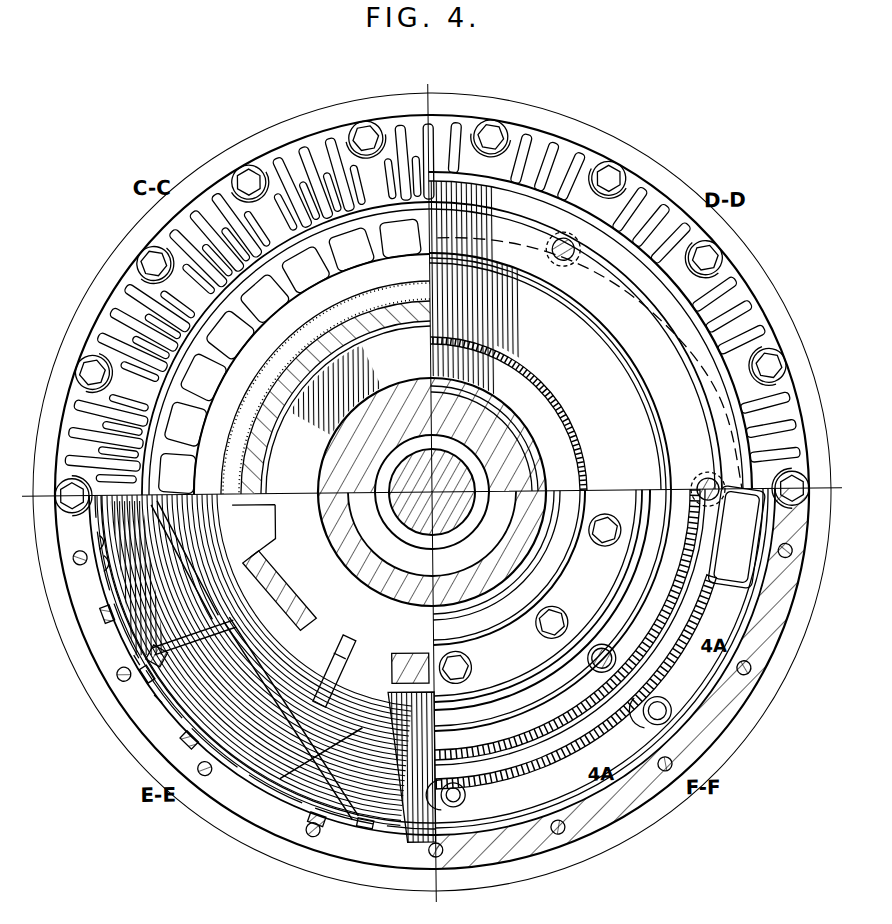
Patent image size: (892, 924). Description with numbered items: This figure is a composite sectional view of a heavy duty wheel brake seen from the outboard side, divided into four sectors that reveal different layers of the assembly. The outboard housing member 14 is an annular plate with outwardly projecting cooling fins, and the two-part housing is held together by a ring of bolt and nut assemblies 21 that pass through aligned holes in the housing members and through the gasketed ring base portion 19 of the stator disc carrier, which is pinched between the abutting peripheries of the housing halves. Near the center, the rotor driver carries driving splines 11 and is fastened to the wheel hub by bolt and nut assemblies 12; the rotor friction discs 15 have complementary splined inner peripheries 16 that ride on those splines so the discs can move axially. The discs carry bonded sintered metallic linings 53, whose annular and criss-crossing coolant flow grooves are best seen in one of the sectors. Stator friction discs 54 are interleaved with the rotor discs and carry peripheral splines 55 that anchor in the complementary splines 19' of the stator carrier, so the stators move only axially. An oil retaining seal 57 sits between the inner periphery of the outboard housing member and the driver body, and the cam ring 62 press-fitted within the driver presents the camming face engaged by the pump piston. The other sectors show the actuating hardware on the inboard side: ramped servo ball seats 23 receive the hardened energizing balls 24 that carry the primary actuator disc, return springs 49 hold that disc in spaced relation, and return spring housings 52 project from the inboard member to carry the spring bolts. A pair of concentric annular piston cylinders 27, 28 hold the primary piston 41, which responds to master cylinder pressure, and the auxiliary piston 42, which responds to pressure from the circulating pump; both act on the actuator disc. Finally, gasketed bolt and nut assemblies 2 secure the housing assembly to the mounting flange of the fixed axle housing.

The gasketed bolt and nut assemblies 2 is at (531, 598).
The driving splines 11 is at (281, 590).
The bolt and nut assemblies 12 is at (632, 322).
The outboard housing member 14 is at (432, 492).
The rotor friction discs 15 is at (410, 653).
The splined inner peripheries 16 is at (298, 606).
The gasketed ring base portion 19 is at (192, 731).
The splines 19' is at (220, 760).
The bolt and nut assemblies 21 is at (432, 501).
The ramped servo ball seats 23 is at (535, 761).
The energizing balls 24 is at (556, 752).
The annular piston cylinder 27 is at (431, 491).
The annular piston cylinder 28 is at (432, 492).
The primary piston 41 is at (450, 492).
The auxiliary piston 42 is at (432, 492).
The return springs 49 is at (613, 639).
The return spring housings 52 is at (432, 492).
The bonded sintered metallic linings 53 is at (432, 492).
The stator friction discs 54 is at (268, 754).
The peripheral splines 55 is at (418, 519).
The oil retaining seal 57 is at (414, 474).
The cam ring 62 is at (432, 492).